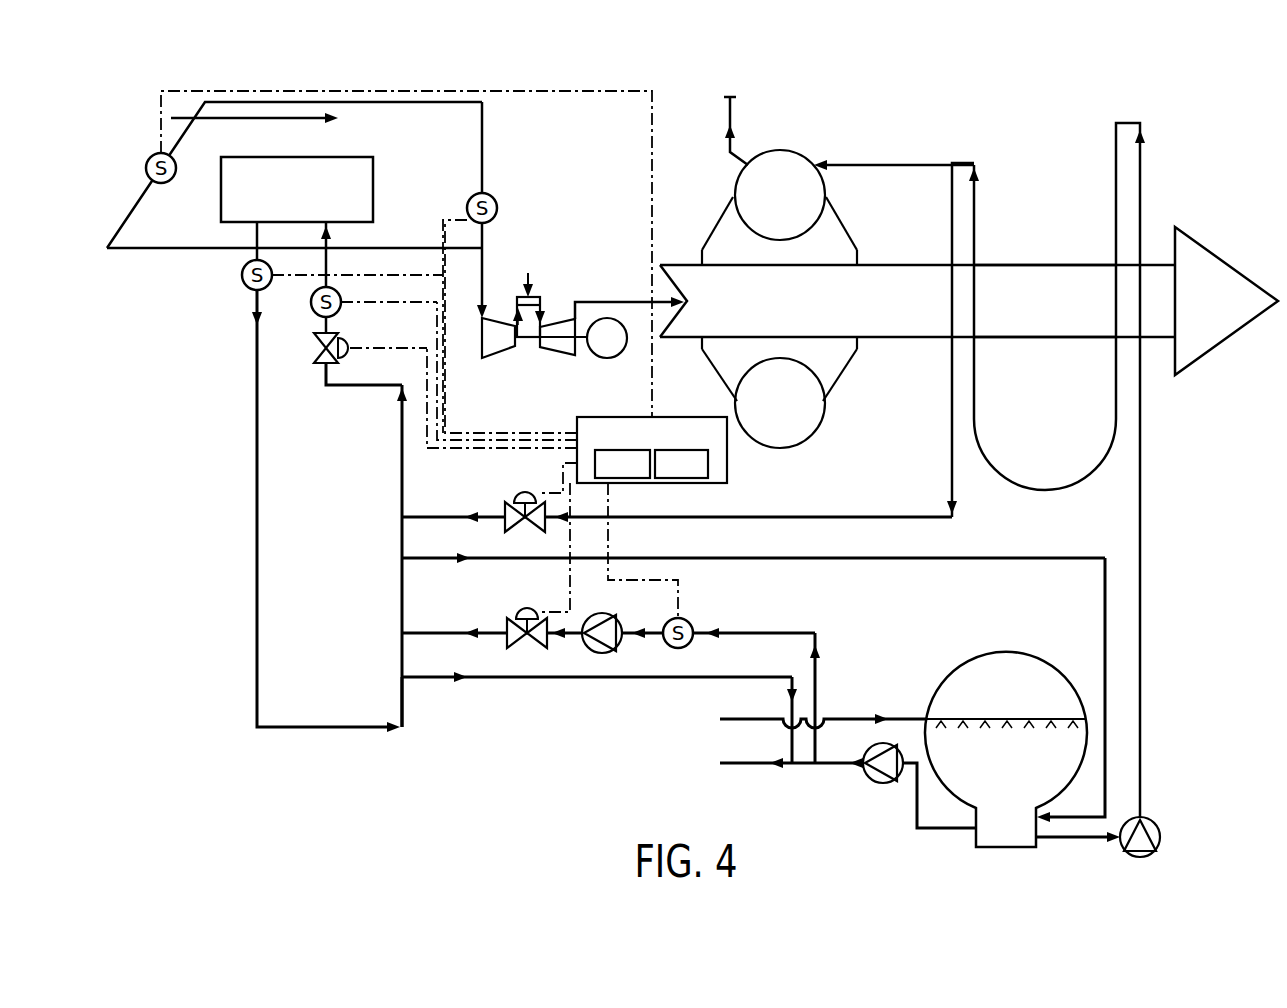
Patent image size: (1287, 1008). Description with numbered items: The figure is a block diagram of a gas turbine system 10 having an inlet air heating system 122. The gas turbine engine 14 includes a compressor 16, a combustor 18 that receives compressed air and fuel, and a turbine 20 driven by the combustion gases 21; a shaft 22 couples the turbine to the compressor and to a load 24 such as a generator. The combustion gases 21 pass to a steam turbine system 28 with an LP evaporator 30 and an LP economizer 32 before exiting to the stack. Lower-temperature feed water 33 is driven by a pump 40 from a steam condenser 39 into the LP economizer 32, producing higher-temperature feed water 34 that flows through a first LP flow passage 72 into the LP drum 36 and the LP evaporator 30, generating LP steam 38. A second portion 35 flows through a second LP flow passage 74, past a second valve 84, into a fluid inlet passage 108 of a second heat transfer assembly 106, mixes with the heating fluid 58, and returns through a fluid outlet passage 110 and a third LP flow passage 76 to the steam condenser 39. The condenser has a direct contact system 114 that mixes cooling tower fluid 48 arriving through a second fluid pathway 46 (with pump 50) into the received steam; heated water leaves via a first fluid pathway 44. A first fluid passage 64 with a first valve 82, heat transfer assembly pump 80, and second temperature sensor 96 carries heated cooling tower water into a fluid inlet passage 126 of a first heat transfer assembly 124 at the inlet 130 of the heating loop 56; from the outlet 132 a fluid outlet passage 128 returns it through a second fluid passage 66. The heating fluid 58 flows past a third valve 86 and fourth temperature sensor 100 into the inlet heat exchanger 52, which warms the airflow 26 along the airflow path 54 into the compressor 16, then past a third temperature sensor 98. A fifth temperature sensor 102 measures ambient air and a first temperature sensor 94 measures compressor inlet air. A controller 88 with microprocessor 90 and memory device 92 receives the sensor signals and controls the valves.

The gas turbine system 10 is at (522, 84).
The gas turbine engine 14 is at (582, 242).
The compressor 16 is at (486, 354).
The combustor 18 is at (542, 300).
The turbine 20 is at (555, 354).
The combustion gases 21 is at (616, 302).
The shaft 22 is at (527, 340).
The load 24 is at (618, 355).
The airflow 26 is at (480, 300).
The steam turbine system 28 is at (1230, 155).
The LP evaporator 30 is at (701, 252).
The LP economizer 32 is at (1024, 263).
The lower-temperature feed water 33 is at (1142, 163).
The higher-temperature feed water 34 is at (976, 210).
The second portion of higher-temperature feed water 35 is at (950, 215).
The LP drum 36 is at (740, 185).
The LP steam 38 is at (728, 112).
The steam condenser 39 is at (1005, 652).
The pump 40 is at (1161, 838).
The first fluid pathway 44 is at (748, 766).
The second fluid pathway 46 is at (763, 724).
The cooling tower fluid 48 is at (850, 718).
The pump 50 is at (901, 784).
The inlet heat exchanger 52 is at (374, 175).
The airflow path 54 is at (303, 118).
The heating loop 56 is at (270, 511).
The heating fluid 58 is at (256, 468).
The first fluid passage 64 is at (818, 668).
The second fluid passage 66 is at (790, 708).
The first LP flow passage 72 is at (850, 164).
The second LP flow passage 74 is at (948, 378).
The third LP flow passage 76 is at (1103, 642).
The heat transfer assembly pump 80 is at (604, 653).
The first valve 82 is at (510, 645).
The second valve 84 is at (522, 532).
The third valve 86 is at (314, 360).
The controller 88 is at (611, 418).
The microprocessor 90 is at (615, 480).
The memory device 92 is at (687, 480).
The first temperature sensor 94 is at (498, 208).
The second temperature sensor 96 is at (681, 648).
The third temperature sensor 98 is at (242, 277).
The fourth temperature sensor 100 is at (312, 298).
The fifth temperature sensor 102 is at (147, 164).
The second heat transfer assembly 106 is at (352, 538).
The fluid inlet passage 108 is at (417, 517).
The fluid outlet passage 110 is at (418, 558).
The direct contact system 114 is at (940, 718).
The inlet air heating system 122 is at (80, 130).
The first heat transfer assembly 124 is at (352, 652).
The fluid inlet passage 126 is at (418, 633).
The fluid outlet passage 128 is at (418, 677).
The inlet 130 is at (402, 633).
The outlet 132 is at (400, 677).